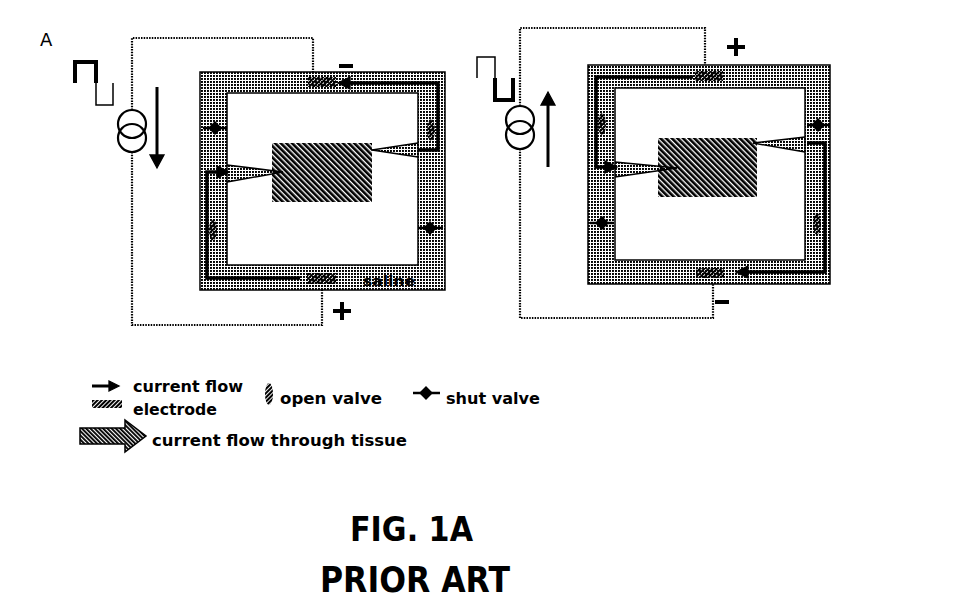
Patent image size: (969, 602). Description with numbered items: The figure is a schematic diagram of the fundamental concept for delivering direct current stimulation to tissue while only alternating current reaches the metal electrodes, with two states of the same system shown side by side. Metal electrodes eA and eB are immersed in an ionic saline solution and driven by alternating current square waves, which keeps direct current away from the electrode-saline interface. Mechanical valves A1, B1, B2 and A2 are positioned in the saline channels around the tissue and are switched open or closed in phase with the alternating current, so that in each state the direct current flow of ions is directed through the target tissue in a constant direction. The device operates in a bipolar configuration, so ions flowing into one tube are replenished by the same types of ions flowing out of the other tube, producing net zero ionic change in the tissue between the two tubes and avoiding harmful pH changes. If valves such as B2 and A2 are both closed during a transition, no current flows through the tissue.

The valve A1 is at (429, 171).
The valve A2 is at (598, 231).
The valve B1 is at (432, 181).
The valve B2 is at (603, 131).
The electrode eA is at (322, 100).
The electrode eB is at (321, 268).